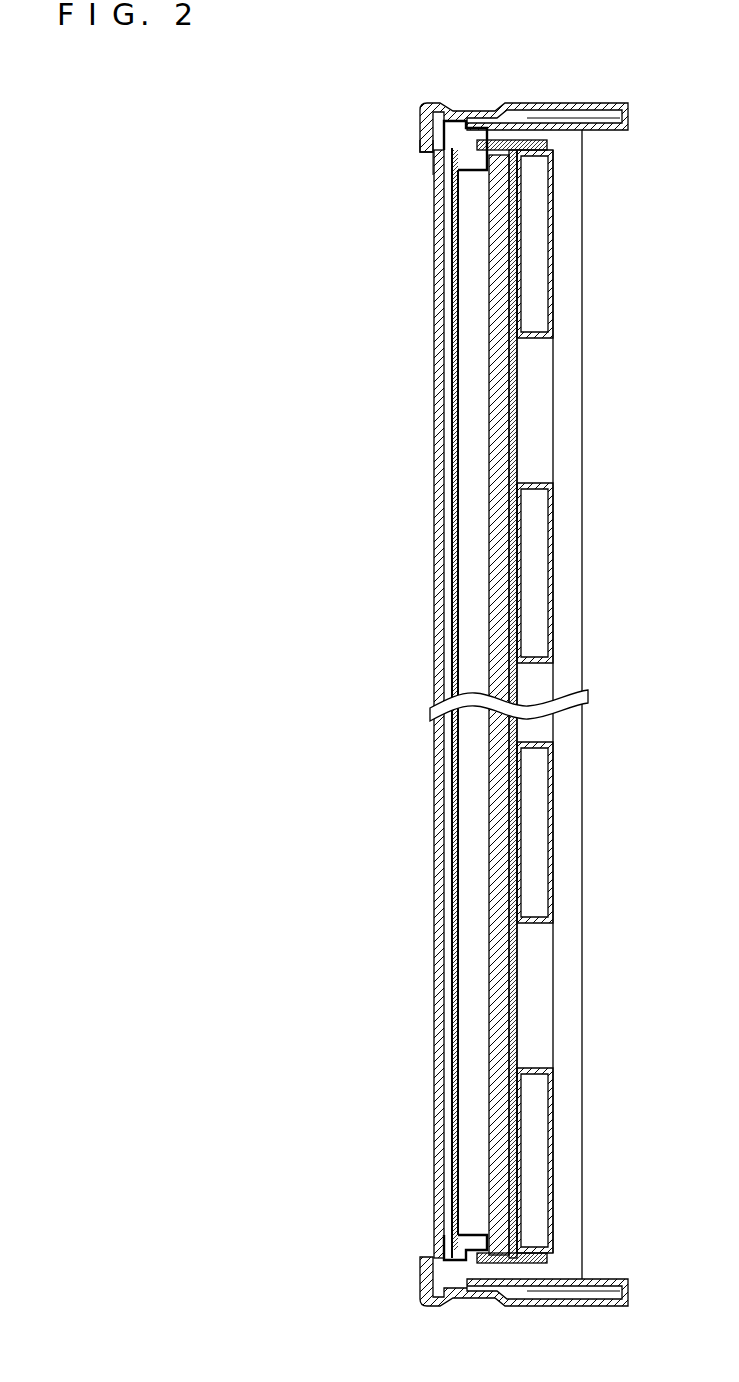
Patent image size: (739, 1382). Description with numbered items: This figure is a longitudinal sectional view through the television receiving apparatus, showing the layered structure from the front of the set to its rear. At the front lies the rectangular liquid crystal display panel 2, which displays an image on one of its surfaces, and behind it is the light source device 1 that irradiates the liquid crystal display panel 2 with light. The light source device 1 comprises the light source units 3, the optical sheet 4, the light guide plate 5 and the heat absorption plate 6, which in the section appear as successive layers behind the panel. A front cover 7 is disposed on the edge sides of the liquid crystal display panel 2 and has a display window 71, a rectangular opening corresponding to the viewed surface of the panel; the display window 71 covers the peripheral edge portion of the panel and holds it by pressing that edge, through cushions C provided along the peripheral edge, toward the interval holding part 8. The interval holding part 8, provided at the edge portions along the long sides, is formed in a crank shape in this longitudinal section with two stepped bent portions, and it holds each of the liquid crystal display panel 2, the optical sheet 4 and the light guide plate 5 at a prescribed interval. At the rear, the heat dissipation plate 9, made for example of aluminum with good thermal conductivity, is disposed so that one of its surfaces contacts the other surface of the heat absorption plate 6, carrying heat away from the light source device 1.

The light source device 1 is at (413, 703).
The liquid crystal display panel 2 is at (433, 1023).
The light source unit 3 is at (500, 1265).
The optical sheet 4 is at (450, 1123).
The light guide plate 5 is at (493, 1170).
The heat absorption plate 6 is at (505, 1208).
The front cover 7 is at (425, 102).
The display window 71 is at (428, 154).
The interval holding part 8 is at (473, 172).
The heat dissipation plate 9 is at (577, 1230).
The cushion C is at (430, 172).